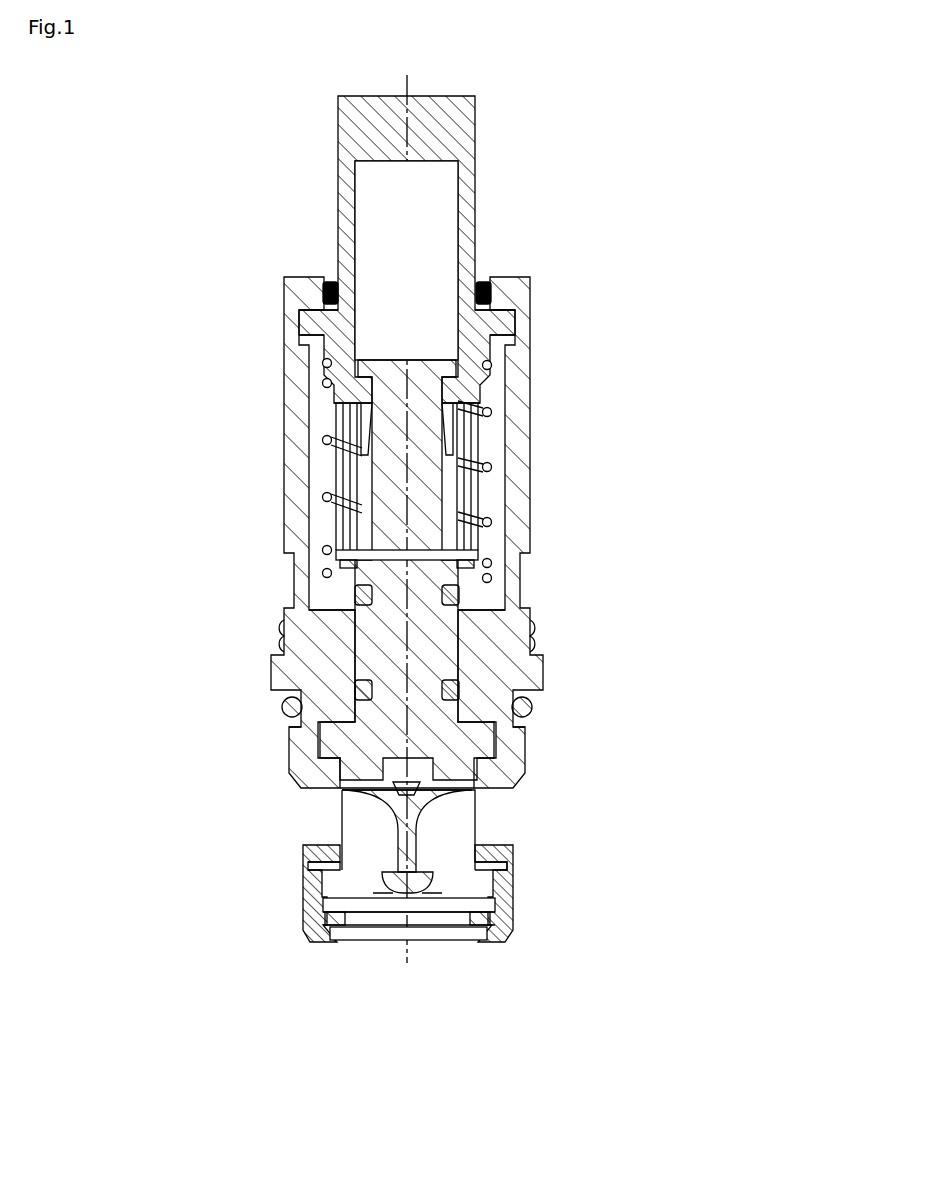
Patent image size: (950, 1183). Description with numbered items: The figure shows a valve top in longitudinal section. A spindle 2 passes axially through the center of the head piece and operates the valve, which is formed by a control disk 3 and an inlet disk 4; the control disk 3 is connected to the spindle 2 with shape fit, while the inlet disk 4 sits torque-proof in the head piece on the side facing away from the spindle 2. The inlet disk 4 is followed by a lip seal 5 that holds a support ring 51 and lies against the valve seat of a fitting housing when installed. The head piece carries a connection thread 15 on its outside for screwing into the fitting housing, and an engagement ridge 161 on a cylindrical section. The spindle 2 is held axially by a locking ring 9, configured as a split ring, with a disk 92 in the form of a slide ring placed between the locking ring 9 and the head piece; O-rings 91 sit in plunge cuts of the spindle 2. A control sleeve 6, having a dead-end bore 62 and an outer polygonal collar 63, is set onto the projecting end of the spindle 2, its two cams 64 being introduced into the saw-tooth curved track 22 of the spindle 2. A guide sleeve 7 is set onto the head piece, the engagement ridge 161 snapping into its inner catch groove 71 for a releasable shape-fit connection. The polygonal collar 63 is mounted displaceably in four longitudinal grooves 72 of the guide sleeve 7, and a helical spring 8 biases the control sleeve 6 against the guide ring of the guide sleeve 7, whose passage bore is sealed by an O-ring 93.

The spindle 2 is at (375, 632).
The control disk 3 is at (460, 808).
The inlet disk 4 is at (490, 883).
The lip seal 5 is at (497, 933).
The control sleeve 6 is at (477, 203).
The guide sleeve 7 is at (530, 368).
The helical spring 8 is at (493, 460).
The locking ring 9 is at (480, 552).
The connection thread 15 is at (528, 752).
The curved track 22 is at (372, 418).
The support ring 51 is at (463, 918).
The dead-end bore 62 is at (372, 220).
The polygonal collar 63 is at (480, 325).
The cams 64 is at (447, 385).
The catch groove 71 is at (527, 636).
The longitudinal grooves 72 is at (472, 490).
The O-ring 91 is at (462, 597).
The disk 92 is at (333, 563).
The O-ring 93 is at (485, 283).
The engagement ridge 161 is at (518, 635).